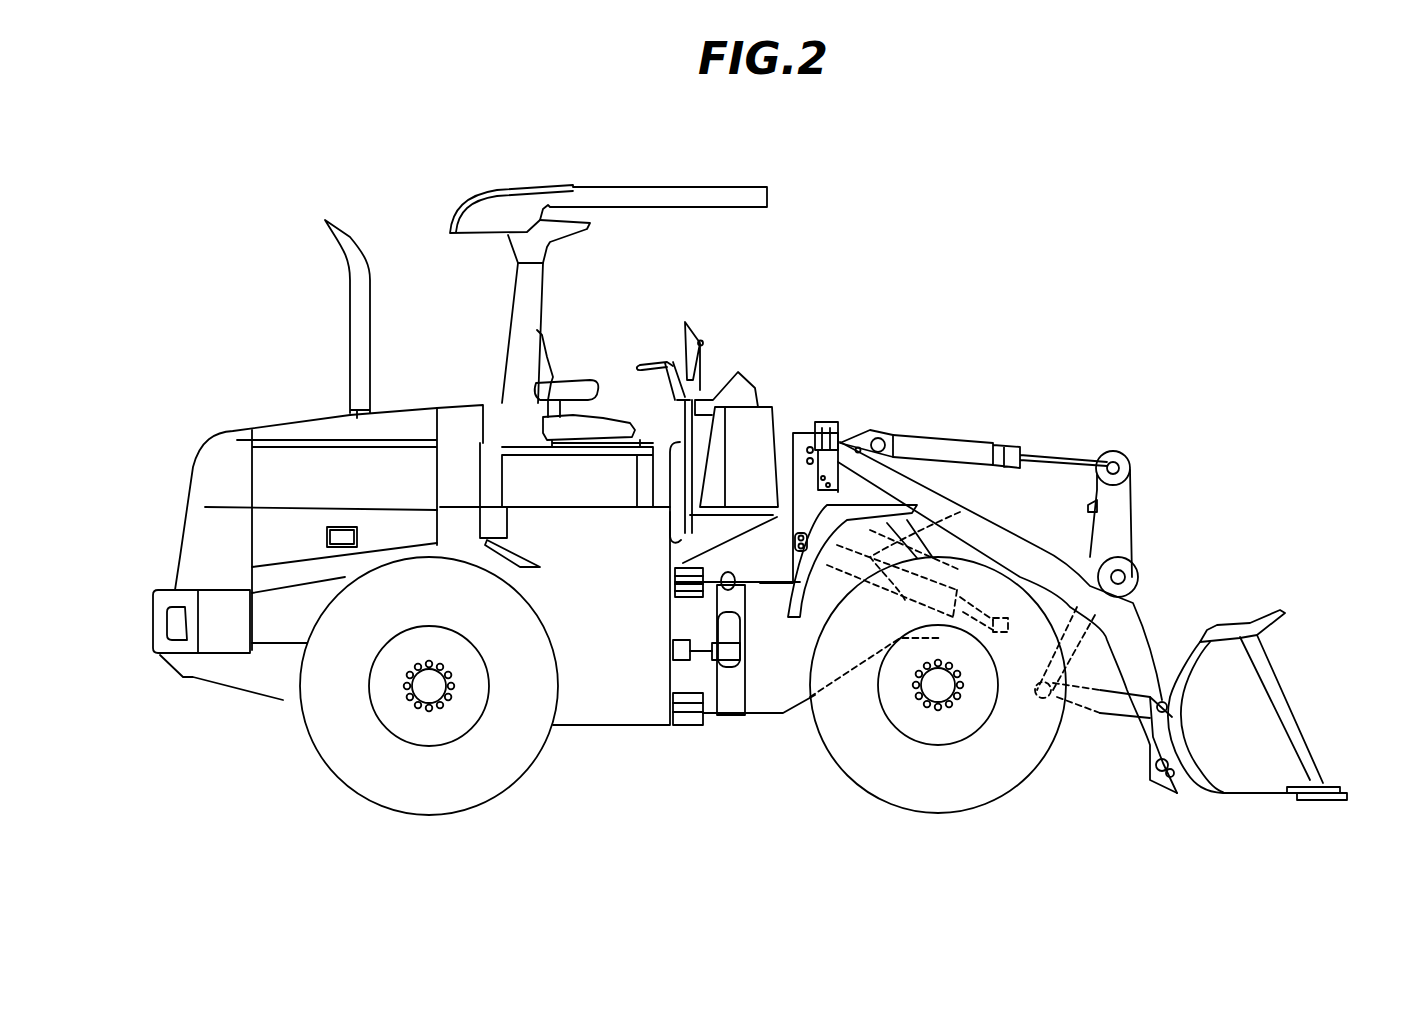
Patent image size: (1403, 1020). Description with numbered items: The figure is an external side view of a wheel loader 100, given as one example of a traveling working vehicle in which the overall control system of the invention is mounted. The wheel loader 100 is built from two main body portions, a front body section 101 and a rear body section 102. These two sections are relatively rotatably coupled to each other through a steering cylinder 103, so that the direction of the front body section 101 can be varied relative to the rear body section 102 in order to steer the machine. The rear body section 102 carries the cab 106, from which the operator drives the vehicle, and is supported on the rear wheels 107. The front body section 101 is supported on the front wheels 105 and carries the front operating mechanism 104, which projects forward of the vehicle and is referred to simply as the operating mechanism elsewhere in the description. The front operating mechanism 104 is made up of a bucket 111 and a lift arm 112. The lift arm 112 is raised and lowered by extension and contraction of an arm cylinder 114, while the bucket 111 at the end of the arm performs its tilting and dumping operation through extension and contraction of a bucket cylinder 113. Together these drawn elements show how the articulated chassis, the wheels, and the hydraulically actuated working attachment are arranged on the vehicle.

The wheel loader 100 is at (912, 350).
The front body section 101 is at (782, 722).
The rear body section 102 is at (625, 712).
The steering cylinder 103 is at (723, 650).
The front operating mechanism 104 is at (1168, 472).
The front wheels 105 is at (938, 800).
The cab 106 is at (592, 367).
The rear wheels 107 is at (432, 800).
The bucket 111 is at (1258, 780).
The lift arm 112 is at (1082, 732).
The bucket cylinder 113 is at (960, 448).
The arm cylinder 114 is at (960, 512).